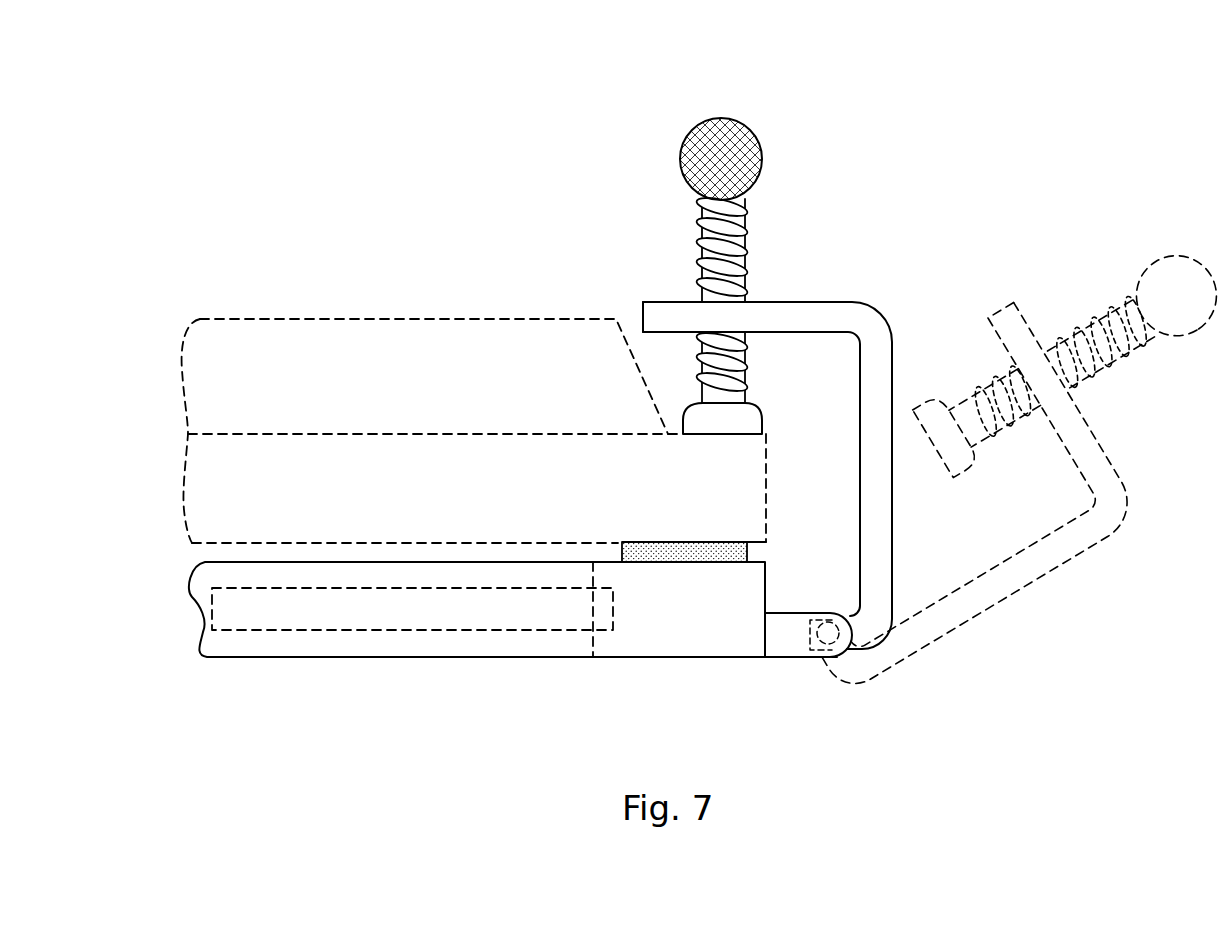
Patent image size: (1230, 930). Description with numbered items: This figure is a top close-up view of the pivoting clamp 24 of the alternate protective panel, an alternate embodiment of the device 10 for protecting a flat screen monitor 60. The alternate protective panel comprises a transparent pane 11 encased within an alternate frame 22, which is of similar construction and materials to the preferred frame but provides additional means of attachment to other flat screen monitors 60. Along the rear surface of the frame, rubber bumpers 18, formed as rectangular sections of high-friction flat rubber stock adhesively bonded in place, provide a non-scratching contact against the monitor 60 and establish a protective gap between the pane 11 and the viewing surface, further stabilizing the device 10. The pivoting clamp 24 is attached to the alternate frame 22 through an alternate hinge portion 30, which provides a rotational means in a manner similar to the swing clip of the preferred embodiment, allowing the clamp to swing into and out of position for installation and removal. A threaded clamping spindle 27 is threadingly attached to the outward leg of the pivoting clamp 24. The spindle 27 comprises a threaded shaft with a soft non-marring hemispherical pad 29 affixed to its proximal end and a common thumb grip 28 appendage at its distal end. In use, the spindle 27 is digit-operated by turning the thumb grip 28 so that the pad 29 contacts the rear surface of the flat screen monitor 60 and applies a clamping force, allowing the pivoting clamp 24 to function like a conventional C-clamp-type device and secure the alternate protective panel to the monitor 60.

The device 10 is at (188, 114).
The flat screen monitor 60 is at (215, 477).
The alternate frame 22 is at (258, 649).
The transparent pane 11 is at (398, 633).
The rubber bumpers 18 is at (653, 552).
The alternate hinge portion 30 is at (788, 648).
The pivoting clamp 24 is at (878, 528).
The threaded clamping spindle 27 is at (748, 340).
The thumb grip 28 is at (750, 150).
The hemispherical pad 29 is at (750, 418).